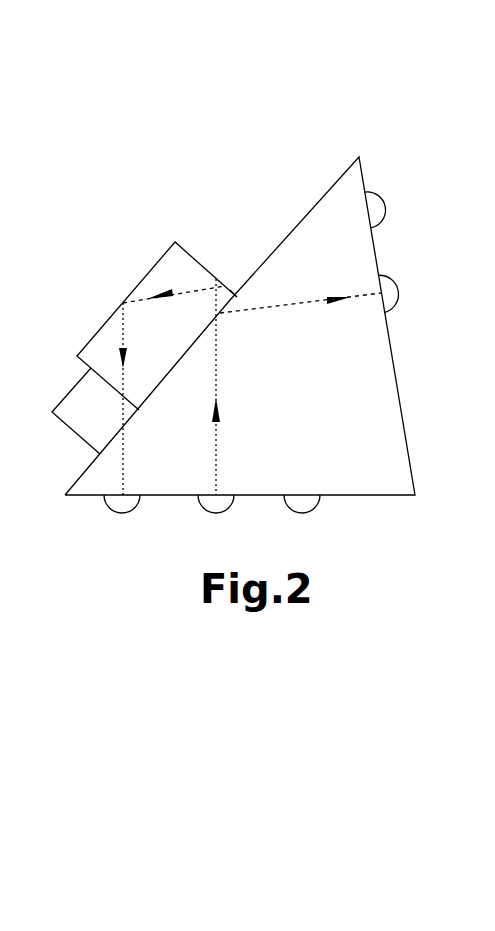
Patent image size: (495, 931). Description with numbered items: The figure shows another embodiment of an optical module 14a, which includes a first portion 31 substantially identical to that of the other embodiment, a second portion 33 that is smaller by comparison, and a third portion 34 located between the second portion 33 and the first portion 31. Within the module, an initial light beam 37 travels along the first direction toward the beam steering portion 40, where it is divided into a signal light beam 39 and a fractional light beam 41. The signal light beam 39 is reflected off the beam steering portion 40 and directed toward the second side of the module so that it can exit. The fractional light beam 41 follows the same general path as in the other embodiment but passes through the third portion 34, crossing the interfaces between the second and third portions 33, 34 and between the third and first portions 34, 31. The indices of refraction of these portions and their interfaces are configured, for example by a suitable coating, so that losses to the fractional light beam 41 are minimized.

The optical module 14a is at (239, 140).
The first portion 31 is at (373, 455).
The second portion 33 is at (165, 272).
The third portion 34 is at (80, 420).
The initial light beam 37 is at (216, 453).
The signal light beam 39 is at (285, 308).
The beam steering portion 40 is at (232, 297).
The fractional light beam 41 is at (122, 334).